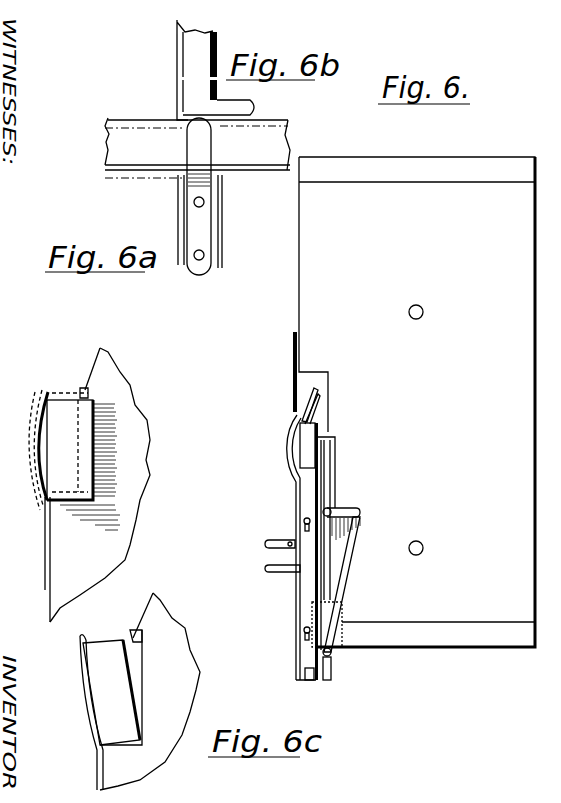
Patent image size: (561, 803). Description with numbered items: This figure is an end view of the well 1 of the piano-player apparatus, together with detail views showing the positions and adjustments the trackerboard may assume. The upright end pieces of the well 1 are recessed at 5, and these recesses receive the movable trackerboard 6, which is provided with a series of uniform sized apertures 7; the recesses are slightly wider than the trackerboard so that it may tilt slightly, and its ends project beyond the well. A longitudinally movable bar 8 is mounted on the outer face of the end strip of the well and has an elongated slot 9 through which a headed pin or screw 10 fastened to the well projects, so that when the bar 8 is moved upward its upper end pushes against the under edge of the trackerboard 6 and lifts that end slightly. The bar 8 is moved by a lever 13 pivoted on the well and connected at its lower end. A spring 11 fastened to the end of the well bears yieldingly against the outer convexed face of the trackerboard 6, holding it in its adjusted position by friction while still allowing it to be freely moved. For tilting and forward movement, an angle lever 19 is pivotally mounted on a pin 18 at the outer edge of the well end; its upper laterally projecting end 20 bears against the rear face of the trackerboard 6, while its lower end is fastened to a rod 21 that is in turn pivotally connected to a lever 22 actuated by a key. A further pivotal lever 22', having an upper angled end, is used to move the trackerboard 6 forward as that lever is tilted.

In FIG. 6, the well 1 is at (415, 402).
In FIG. 6a, the well 1 is at (135, 410).
In FIG. 6c, the well 1 is at (185, 668).
In FIG. 6b, the well 1 is at (225, 203).
In FIG. 6, the recess 5 is at (315, 412).
In FIG. 6a, the recess 5 is at (85, 390).
In FIG. 6c, the recess 5 is at (138, 632).
In FIG. 6, the trackerboard 6 is at (300, 452).
In FIG. 6a, the trackerboard 6 is at (55, 428).
In FIG. 6c, the trackerboard 6 is at (95, 677).
In FIG. 6b, the trackerboard 6 is at (272, 145).
In FIG. 6, the apertures 7 is at (318, 416).
In FIG. 6, the longitudinally movable bar 8 is at (305, 594).
In FIG. 6, the elongated slot 9 is at (302, 521).
In FIG. 6, the headed pin or screw 10 is at (303, 518).
In FIG. 6, the spring 11 is at (296, 428).
In FIG. 6a, the spring 11 is at (45, 572).
In FIG. 6b, the spring 11 is at (210, 228).
In FIG. 6, the lever 13 is at (263, 546).
In FIG. 6, the pin 18 is at (330, 507).
In FIG. 6, the angle lever 19 is at (322, 458).
In FIG. 6, the upper laterally projecting end 20 is at (325, 438).
In FIG. 6, the rod 21 is at (350, 545).
In FIG. 6, the lever 22 is at (351, 669).
In FIG. 6, the pivotal lever 22' is at (264, 582).